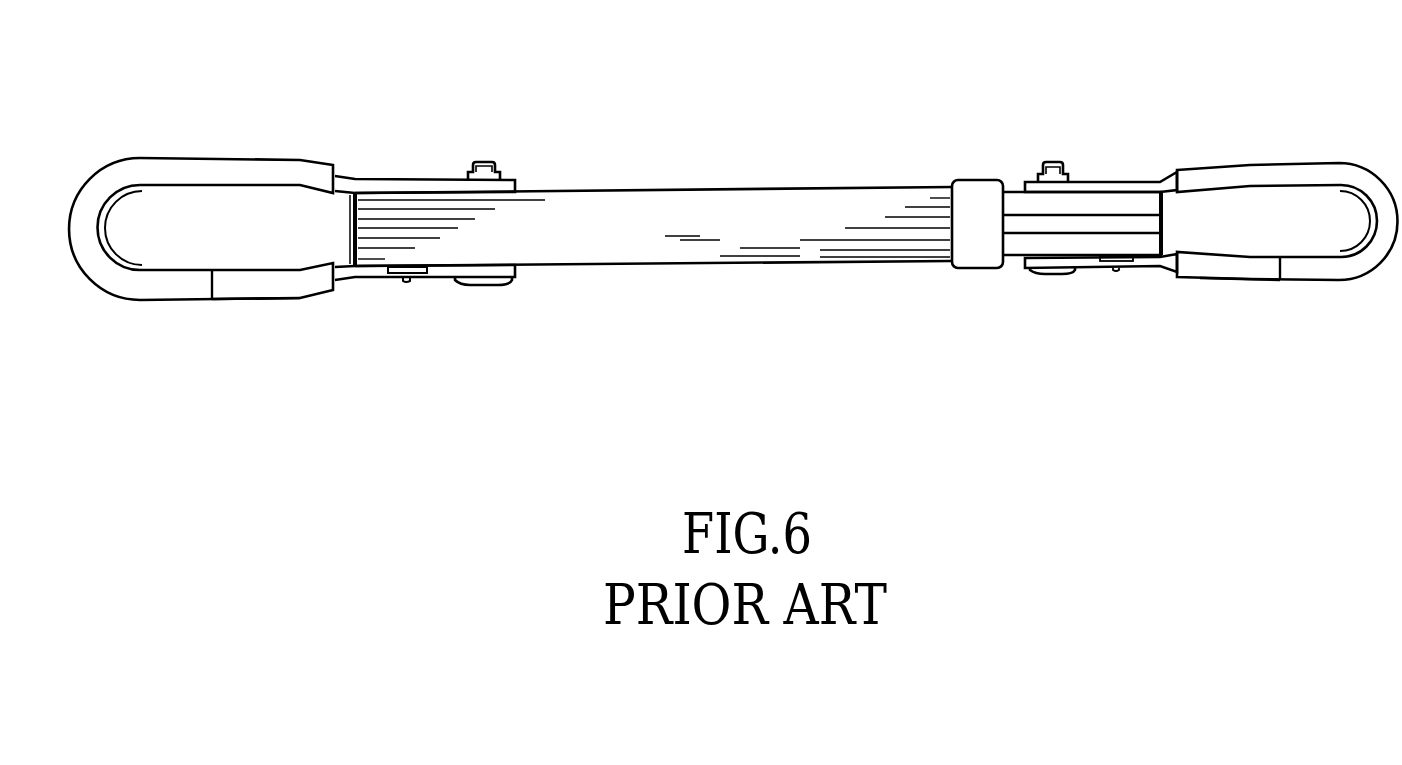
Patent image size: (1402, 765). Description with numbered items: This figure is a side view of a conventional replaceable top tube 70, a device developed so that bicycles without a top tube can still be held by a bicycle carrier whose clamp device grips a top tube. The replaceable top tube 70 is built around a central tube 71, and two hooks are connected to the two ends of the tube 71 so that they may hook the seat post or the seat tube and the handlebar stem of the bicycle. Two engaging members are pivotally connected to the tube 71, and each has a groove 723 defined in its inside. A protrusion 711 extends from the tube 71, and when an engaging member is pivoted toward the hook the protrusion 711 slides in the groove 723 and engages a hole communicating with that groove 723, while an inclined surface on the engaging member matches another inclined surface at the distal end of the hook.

The replaceable top tube 70 is at (734, 186).
The tube 71 is at (715, 262).
The protrusion 711 is at (405, 282).
The groove 723 is at (422, 263).